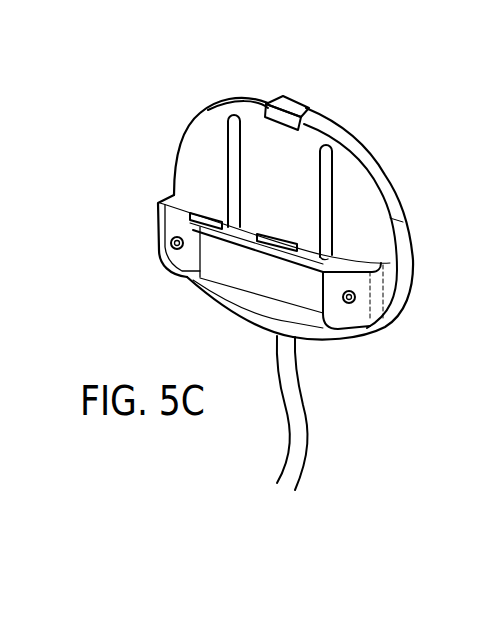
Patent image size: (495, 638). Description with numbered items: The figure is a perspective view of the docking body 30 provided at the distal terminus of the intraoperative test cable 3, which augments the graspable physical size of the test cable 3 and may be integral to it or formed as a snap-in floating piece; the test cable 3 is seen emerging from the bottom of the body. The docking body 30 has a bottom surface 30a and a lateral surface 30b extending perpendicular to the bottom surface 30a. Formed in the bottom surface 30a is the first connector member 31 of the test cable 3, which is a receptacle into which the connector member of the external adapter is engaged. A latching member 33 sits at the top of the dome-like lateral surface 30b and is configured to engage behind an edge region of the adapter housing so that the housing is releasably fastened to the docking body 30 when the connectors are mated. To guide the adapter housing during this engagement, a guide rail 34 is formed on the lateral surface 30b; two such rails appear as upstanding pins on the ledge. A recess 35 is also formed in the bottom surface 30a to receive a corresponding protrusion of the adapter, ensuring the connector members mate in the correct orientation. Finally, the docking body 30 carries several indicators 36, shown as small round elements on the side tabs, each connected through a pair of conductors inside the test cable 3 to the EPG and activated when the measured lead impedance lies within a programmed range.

The test cable 3 is at (323, 413).
The docking body 30 is at (340, 120).
The bottom surface 30a is at (388, 267).
The lateral surface 30b is at (363, 199).
The first connector member 31 is at (279, 236).
The latching member 33 is at (288, 104).
The guide rail 34 is at (335, 226).
The recess 35 is at (190, 218).
The indicator 36 is at (171, 243).